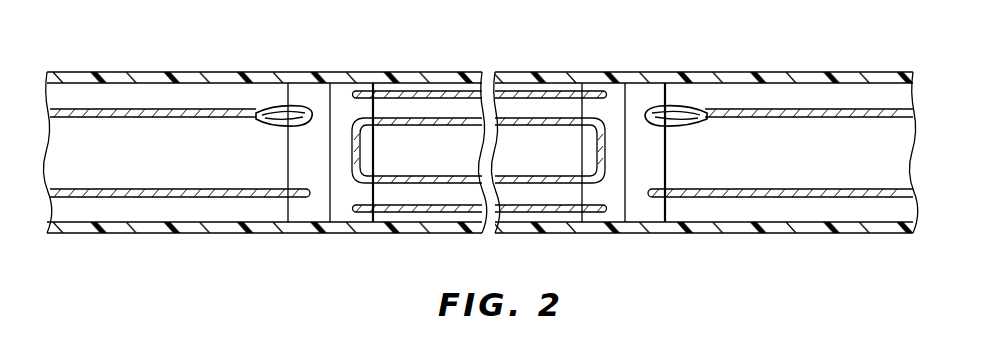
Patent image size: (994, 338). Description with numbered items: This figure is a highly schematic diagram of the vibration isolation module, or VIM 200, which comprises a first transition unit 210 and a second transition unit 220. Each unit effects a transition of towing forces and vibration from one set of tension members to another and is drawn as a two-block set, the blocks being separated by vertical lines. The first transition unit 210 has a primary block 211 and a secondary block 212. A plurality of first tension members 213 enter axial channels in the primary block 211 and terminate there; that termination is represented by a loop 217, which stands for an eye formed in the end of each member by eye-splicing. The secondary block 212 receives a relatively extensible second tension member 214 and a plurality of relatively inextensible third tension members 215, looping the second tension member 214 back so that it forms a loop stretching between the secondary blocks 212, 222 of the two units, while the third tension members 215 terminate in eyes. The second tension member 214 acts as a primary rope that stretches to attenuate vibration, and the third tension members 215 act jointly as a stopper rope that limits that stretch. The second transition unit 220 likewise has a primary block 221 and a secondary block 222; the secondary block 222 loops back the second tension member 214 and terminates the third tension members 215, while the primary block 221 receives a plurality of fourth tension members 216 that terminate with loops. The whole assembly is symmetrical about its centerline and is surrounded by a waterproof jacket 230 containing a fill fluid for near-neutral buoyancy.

The VIM 200 is at (688, 42).
The first transition unit 210 is at (339, 54).
The primary block 211 is at (313, 210).
The secondary block 212 is at (349, 210).
The first tension members 213 is at (122, 117).
The second tension member 214 is at (387, 178).
The third tension members 215 is at (523, 93).
The fourth tension members 216 is at (798, 115).
The loop 217 is at (301, 105).
The second transition unit 220 is at (633, 54).
The primary block 221 is at (657, 210).
The secondary block 222 is at (613, 210).
The waterproof jacket 230 is at (838, 72).